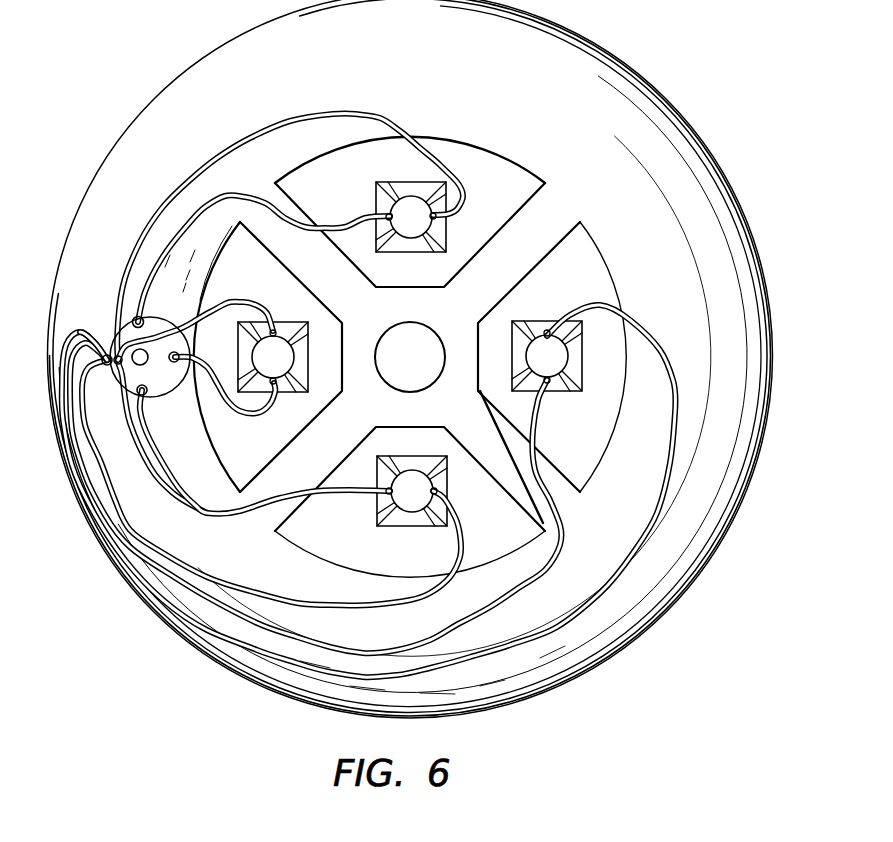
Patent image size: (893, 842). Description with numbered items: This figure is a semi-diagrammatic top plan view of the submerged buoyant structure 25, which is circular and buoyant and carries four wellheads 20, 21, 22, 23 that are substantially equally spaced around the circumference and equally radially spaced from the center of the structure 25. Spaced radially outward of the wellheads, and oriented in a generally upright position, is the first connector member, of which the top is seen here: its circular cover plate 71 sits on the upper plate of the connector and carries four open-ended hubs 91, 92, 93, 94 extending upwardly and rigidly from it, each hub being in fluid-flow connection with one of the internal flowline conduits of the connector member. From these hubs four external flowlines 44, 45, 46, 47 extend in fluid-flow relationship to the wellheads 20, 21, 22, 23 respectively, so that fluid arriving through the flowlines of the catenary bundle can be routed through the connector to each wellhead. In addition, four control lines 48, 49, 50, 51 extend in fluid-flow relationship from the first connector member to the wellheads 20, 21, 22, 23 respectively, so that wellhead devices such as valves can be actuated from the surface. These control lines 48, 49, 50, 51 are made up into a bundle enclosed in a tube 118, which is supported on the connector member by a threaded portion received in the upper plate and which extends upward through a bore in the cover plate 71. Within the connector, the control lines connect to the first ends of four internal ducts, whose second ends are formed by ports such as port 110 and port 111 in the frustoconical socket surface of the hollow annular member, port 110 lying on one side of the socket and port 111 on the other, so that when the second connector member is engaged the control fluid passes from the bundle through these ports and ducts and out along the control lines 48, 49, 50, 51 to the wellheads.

The wellhead 20 is at (298, 310).
The wellhead 21 is at (458, 230).
The wellhead 22 is at (597, 394).
The wellhead 23 is at (455, 456).
The submerged buoyant structure 25 is at (733, 179).
The external flowline 44 is at (228, 414).
The external flowline 45 is at (363, 494).
The external flowline 46 is at (541, 430).
The external flowline 47 is at (349, 213).
The control line 48 is at (238, 300).
The control line 49 is at (380, 118).
The control line 50 is at (672, 367).
The control line 51 is at (470, 542).
The circular cover plate 71 is at (107, 327).
The hub 91 is at (107, 370).
The hub 92 is at (128, 300).
The hub 93 is at (185, 350).
The hub 94 is at (148, 398).
The port 110 is at (155, 310).
The port 111 is at (170, 318).
The tube 118 is at (134, 364).